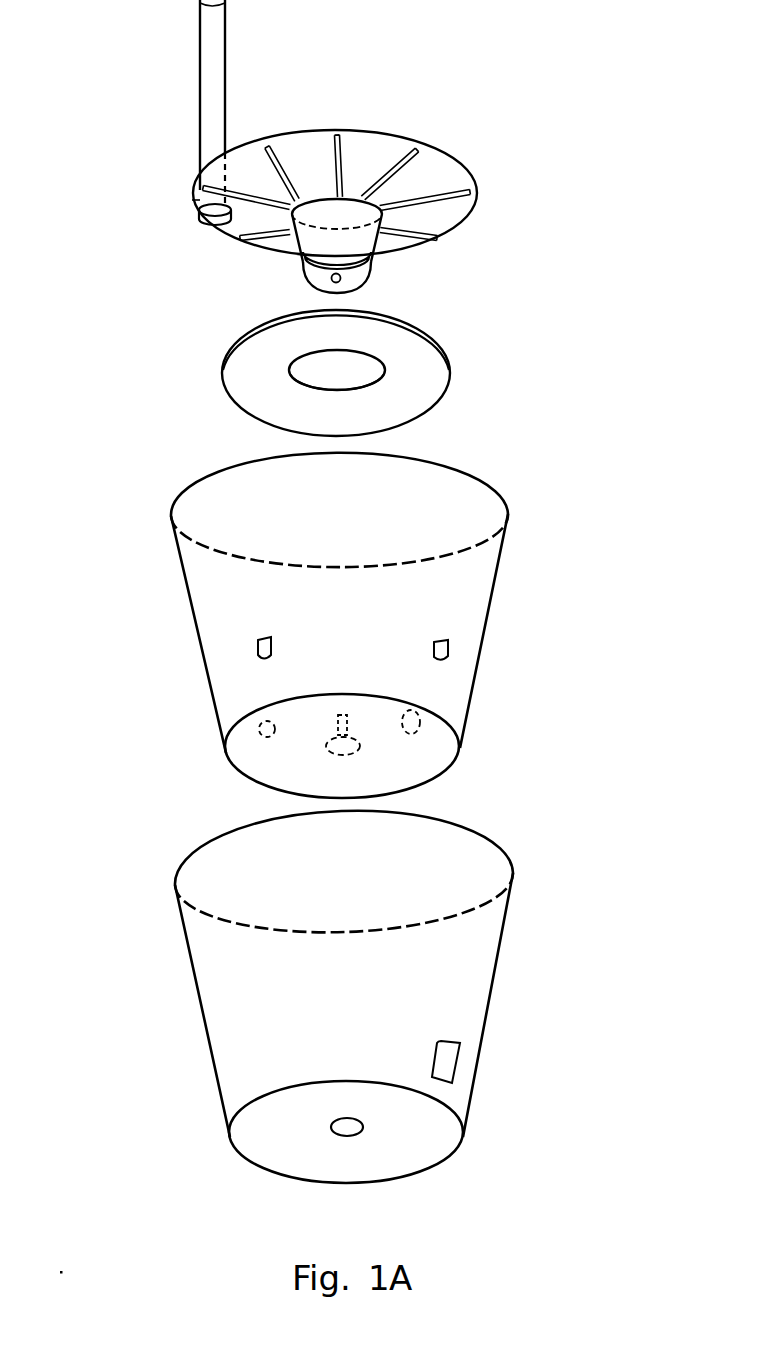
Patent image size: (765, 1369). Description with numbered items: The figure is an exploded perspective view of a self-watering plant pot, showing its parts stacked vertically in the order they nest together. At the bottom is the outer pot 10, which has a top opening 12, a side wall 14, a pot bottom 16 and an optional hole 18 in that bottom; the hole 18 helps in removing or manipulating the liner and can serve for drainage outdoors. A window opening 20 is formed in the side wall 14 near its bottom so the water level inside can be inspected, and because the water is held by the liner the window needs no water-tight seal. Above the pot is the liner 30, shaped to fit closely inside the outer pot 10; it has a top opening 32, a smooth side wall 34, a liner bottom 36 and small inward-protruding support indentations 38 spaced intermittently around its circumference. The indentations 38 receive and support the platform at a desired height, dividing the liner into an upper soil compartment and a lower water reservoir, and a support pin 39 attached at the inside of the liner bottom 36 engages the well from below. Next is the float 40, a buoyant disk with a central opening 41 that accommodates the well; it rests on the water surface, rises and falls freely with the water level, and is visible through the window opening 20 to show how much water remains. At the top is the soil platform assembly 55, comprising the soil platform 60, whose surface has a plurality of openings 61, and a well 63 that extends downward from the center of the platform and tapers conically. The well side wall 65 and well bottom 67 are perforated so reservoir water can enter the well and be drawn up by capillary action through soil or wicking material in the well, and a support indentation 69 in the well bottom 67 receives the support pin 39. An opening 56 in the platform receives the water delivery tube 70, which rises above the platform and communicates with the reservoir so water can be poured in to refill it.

The outer pot 10 is at (343, 1023).
The top opening 12 is at (228, 877).
The side wall 14 is at (475, 952).
The pot bottom 16 is at (430, 1138).
The hole 18 is at (335, 1132).
The window opening 20 is at (440, 1065).
The liner 30 is at (351, 639).
The top opening 32 is at (467, 510).
The side wall 34 is at (220, 577).
The liner bottom 36 is at (430, 748).
The support indentations 38 is at (256, 643).
The support pin 39 is at (357, 750).
The float 40 is at (428, 383).
The central opening 41 is at (312, 371).
The soil platform assembly 55 is at (192, 200).
The opening 56 is at (210, 218).
The soil platform 60 is at (380, 153).
The openings 61 is at (343, 143).
The well 63 is at (282, 247).
The side wall 65 is at (369, 254).
The well bottom 67 is at (353, 287).
The support indentation 69 is at (336, 279).
The water delivery tube 70 is at (215, 45).